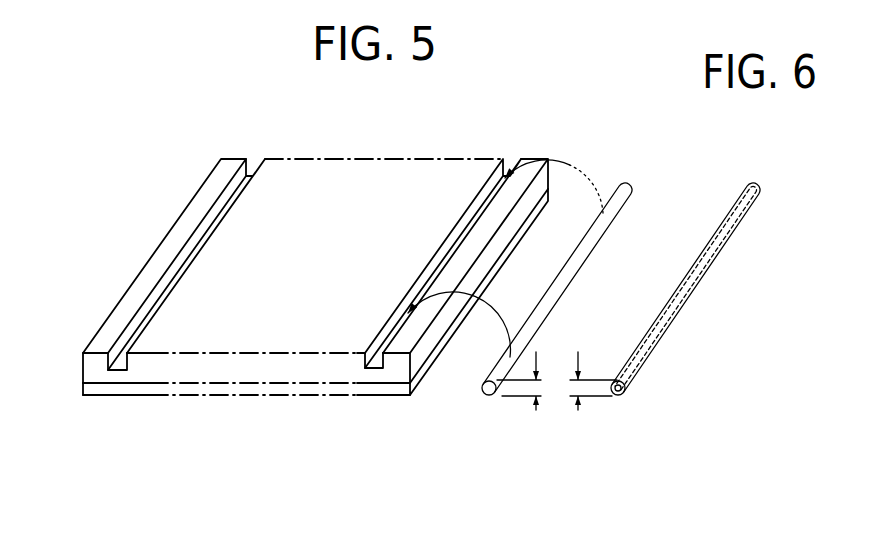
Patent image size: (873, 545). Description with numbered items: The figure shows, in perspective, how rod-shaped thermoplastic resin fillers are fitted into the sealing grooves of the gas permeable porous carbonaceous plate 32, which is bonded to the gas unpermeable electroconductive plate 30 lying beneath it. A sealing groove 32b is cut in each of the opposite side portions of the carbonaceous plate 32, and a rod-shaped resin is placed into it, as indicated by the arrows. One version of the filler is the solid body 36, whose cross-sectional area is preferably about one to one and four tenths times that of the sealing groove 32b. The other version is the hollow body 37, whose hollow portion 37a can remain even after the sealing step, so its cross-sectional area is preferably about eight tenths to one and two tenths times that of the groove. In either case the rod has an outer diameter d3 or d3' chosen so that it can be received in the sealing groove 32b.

In FIG. 5, the gas unpermeable electroconductive plate 30 is at (132, 390).
In FIG. 5, the carbonaceous plate 32 is at (88, 363).
In FIG. 5, the sealing groove 32b is at (120, 363).
In FIG. 5, the solid body 36 is at (598, 248).
In FIG. 6, the hollow body 37 is at (695, 293).
In FIG. 6, the hollow portion 37a is at (620, 397).
In FIG. 5, the outer diameter d3 is at (522, 410).
In FIG. 6, the outer diameter d3' is at (592, 410).